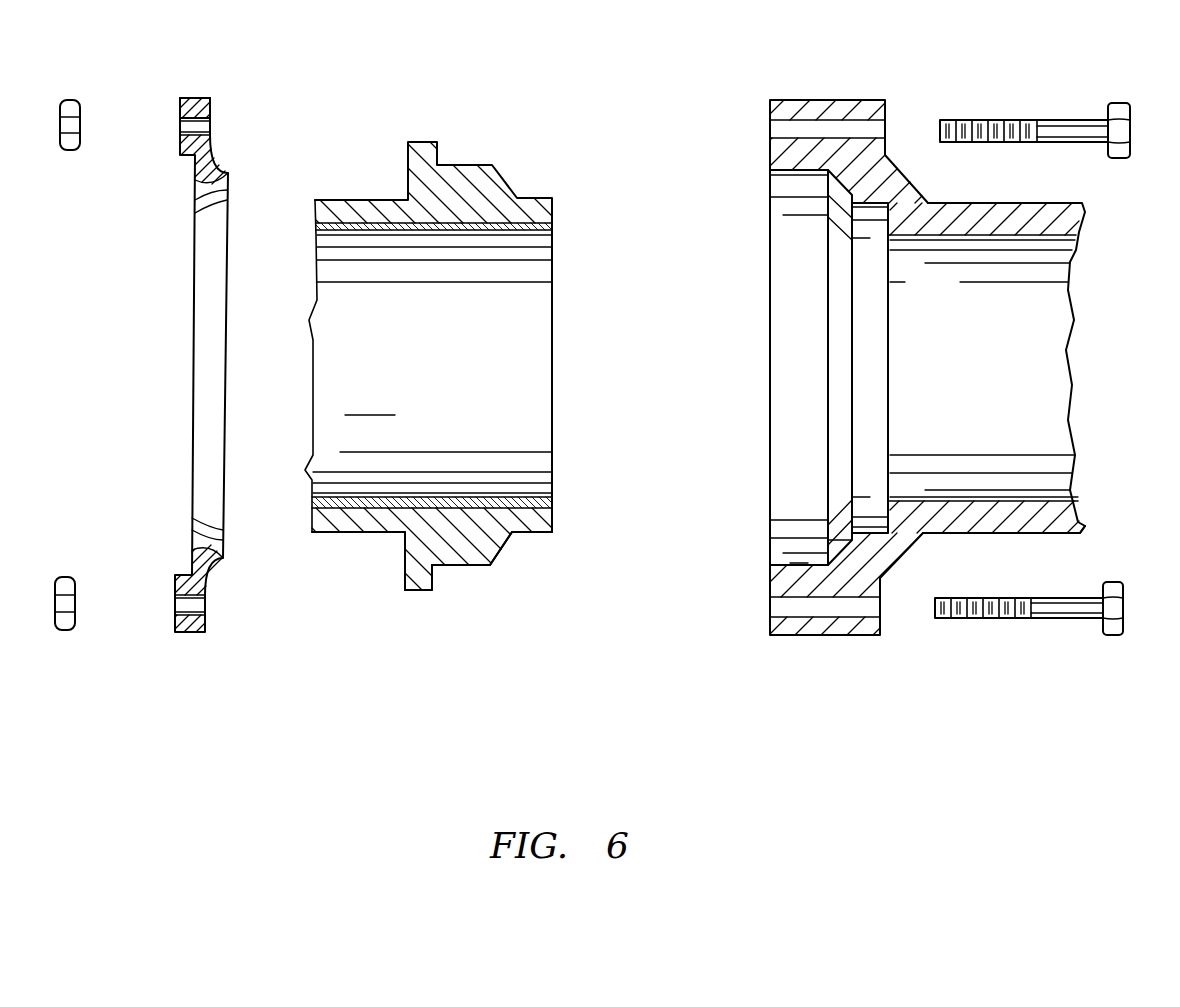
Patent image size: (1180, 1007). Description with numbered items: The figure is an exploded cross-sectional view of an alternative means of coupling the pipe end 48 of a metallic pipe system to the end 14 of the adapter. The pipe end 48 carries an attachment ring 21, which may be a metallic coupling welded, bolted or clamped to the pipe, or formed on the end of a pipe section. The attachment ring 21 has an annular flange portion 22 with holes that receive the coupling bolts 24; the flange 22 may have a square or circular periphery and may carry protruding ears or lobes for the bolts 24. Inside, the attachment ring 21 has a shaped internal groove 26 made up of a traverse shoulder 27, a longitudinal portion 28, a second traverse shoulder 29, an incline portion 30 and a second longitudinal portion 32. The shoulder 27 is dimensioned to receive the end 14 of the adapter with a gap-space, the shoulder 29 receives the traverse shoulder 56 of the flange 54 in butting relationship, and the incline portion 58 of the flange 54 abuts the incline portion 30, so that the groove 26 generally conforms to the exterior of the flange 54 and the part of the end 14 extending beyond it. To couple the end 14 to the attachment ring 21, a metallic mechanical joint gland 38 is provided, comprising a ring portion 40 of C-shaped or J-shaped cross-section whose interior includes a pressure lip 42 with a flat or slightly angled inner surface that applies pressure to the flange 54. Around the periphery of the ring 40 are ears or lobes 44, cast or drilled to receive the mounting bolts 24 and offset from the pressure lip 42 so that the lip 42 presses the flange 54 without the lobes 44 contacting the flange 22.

The end of the adapter 14 is at (338, 534).
The attachment ring 21 is at (897, 163).
The annular flange portion 22 is at (773, 152).
The coupling bolts 24 is at (1073, 122).
The internal groove 26 is at (815, 384).
The traverse shoulder 27 is at (880, 232).
The longitudinal portion 28 is at (867, 532).
The second traverse shoulder 29 is at (847, 537).
The incline portion 30 is at (828, 187).
The second longitudinal portion 32 is at (787, 556).
The mechanical joint gland 38 is at (203, 330).
The ring portion 40 is at (193, 162).
The pressure lip 42 is at (228, 177).
The ears or lobes 44 is at (180, 108).
The pipe end 48 is at (1067, 535).
The flange 54 is at (440, 567).
The traverse shoulder of flange 56 is at (517, 537).
The incline portion of flange 58 is at (490, 563).